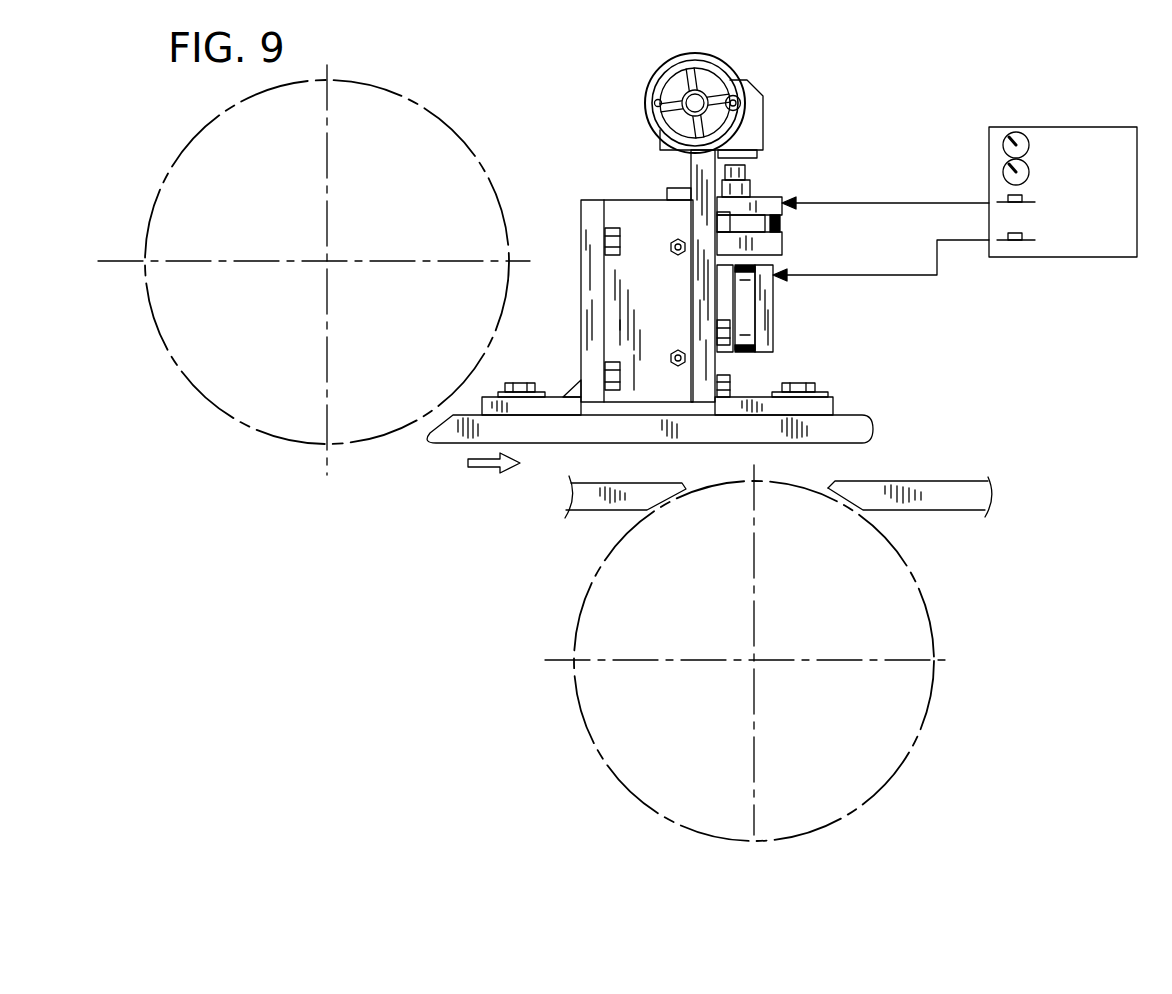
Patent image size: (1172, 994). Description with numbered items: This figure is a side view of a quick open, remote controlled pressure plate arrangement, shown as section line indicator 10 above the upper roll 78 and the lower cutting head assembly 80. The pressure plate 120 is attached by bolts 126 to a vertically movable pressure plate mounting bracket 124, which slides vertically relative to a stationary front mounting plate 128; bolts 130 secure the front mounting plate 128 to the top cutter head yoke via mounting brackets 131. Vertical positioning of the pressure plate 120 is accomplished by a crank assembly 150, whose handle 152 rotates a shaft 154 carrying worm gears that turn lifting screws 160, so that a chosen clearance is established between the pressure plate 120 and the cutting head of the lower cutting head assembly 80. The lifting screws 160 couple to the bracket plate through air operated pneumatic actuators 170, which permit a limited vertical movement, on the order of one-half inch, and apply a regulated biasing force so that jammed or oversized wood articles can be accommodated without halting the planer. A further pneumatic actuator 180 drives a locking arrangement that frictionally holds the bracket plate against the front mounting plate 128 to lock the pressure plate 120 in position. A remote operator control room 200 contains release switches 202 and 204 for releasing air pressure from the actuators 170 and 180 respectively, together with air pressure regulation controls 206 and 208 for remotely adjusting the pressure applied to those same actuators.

The section line indicator 10 is at (398, 50).
The first roll 78 is at (400, 90).
The lower cutting head assembly 80 is at (925, 566).
The pressure plate 120 is at (857, 430).
The pressure plate mounting bracket 124 is at (722, 408).
The bolts 126 is at (522, 383).
The front mounting plate 128 is at (694, 180).
The bolts 130 is at (720, 376).
The mounting brackets 131 is at (588, 240).
The crank assembly 150 is at (709, 88).
The handle 152 is at (660, 72).
The shaft 154 is at (703, 100).
The lifting screws 160 is at (748, 174).
The pneumatic actuators 170 is at (772, 246).
The pneumatic actuator 180 is at (770, 318).
The remote operator control room 200 is at (955, 173).
The release switch 202 is at (1022, 193).
The release switch 204 is at (1020, 232).
The air pressure regulation control 206 is at (1029, 140).
The air pressure regulation control 208 is at (1030, 167).